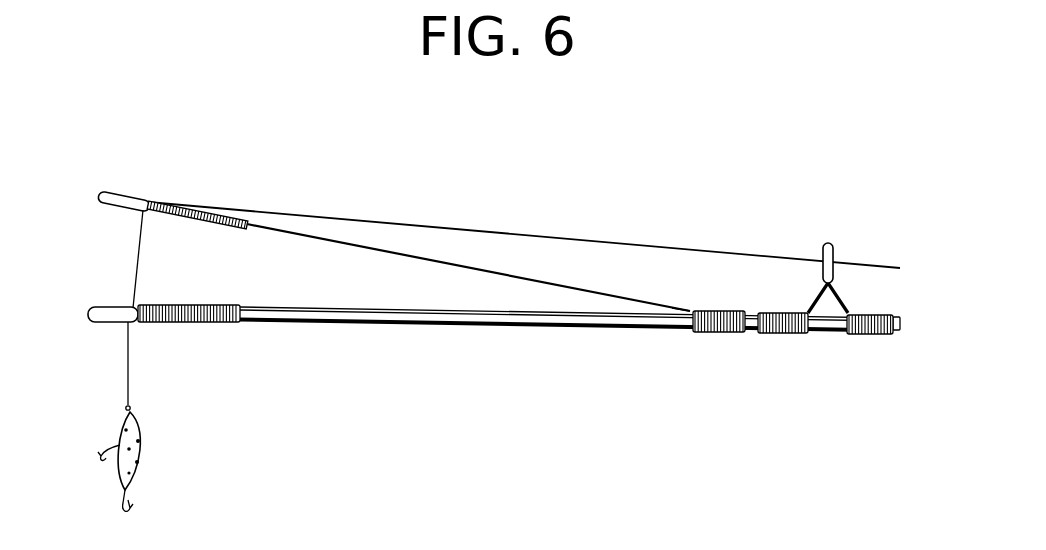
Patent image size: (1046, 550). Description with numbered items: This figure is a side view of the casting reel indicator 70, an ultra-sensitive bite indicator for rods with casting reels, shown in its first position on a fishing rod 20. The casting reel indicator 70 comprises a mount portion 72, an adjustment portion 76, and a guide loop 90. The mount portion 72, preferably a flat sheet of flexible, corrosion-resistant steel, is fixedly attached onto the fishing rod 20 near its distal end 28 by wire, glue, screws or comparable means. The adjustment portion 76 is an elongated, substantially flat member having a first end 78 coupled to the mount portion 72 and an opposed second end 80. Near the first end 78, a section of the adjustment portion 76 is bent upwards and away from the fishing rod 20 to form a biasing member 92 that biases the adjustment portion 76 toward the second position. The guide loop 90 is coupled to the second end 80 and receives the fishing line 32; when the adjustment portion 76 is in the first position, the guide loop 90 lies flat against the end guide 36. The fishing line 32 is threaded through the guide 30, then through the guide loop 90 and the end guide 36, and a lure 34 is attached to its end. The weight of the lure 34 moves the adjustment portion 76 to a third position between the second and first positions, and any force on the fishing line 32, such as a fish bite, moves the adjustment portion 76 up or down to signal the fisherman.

The casting reel indicator 70 is at (247, 147).
The guide loop 90 is at (130, 195).
The second end 80 is at (145, 210).
The fishing line 32 is at (540, 235).
The adjustment portion 76 is at (480, 273).
The end guide 36 is at (112, 324).
The distal end 28 is at (90, 306).
The fishing rod 20 is at (404, 327).
The lure 34 is at (147, 447).
The biasing member 92 is at (672, 307).
The first end 78 is at (690, 306).
The mount portion 72 is at (723, 333).
The guide 30 is at (828, 245).